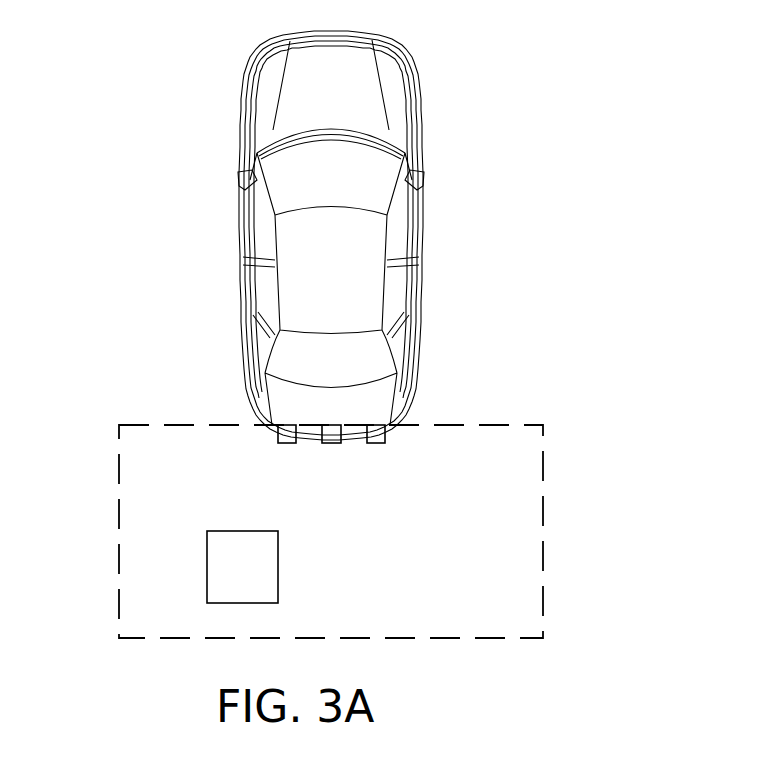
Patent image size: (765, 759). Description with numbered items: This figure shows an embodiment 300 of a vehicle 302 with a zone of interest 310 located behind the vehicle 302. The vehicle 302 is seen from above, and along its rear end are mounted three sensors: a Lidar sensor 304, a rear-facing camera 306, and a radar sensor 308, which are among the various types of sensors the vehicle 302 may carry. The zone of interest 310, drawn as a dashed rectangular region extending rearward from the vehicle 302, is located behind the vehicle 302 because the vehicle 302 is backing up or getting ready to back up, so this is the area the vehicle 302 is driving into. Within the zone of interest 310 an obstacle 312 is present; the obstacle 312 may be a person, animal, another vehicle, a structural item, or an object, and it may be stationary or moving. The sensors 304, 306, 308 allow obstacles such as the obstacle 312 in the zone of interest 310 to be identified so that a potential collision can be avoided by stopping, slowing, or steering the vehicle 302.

The vehicle system 300 is at (578, 52).
The vehicle 302 is at (349, 259).
The Lidar sensor 304 is at (288, 443).
The rear-facing camera 306 is at (327, 440).
The radar sensor 308 is at (373, 438).
The zone of interest 310 is at (119, 425).
The obstacle 312 is at (262, 575).